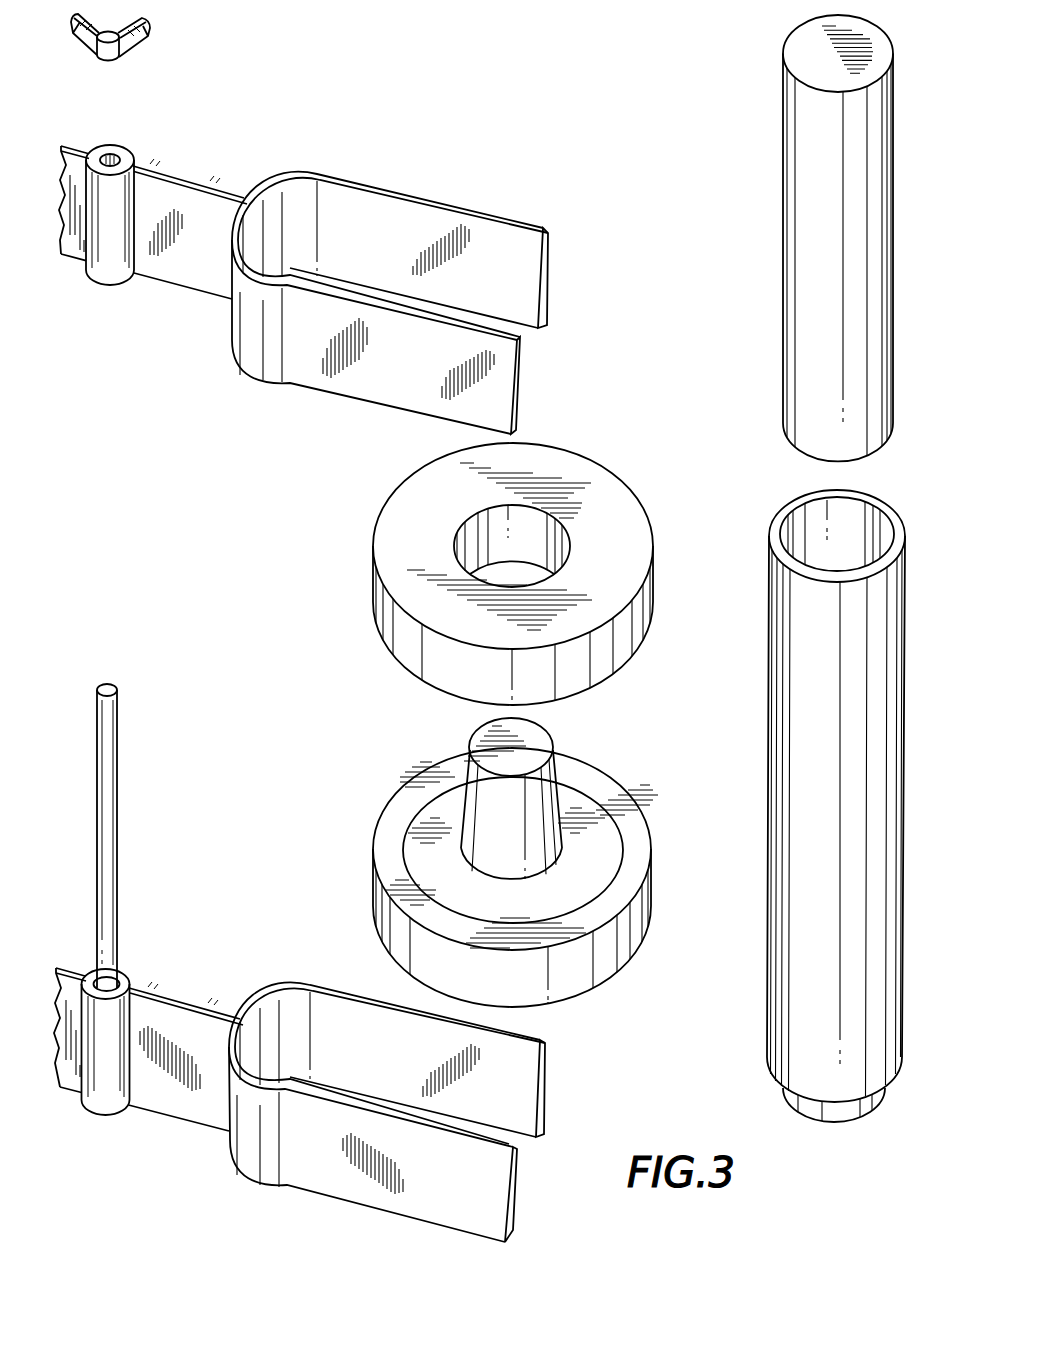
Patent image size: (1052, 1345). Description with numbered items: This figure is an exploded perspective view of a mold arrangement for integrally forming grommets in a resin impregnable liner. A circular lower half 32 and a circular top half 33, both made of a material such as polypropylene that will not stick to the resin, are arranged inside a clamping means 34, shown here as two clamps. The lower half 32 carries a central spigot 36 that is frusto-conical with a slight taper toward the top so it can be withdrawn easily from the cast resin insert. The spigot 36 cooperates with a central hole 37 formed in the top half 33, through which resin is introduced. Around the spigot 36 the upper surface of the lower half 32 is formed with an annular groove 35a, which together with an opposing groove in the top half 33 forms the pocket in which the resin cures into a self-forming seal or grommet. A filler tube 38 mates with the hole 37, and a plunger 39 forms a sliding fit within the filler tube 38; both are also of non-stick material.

The lower half 32 is at (573, 977).
The top half 33 is at (618, 543).
The clamping means 34 is at (362, 383).
The annular groove 35a is at (593, 847).
The central spigot 36 is at (525, 807).
The central hole 37 is at (525, 525).
The filler tube 38 is at (805, 1077).
The plunger 39 is at (815, 203).